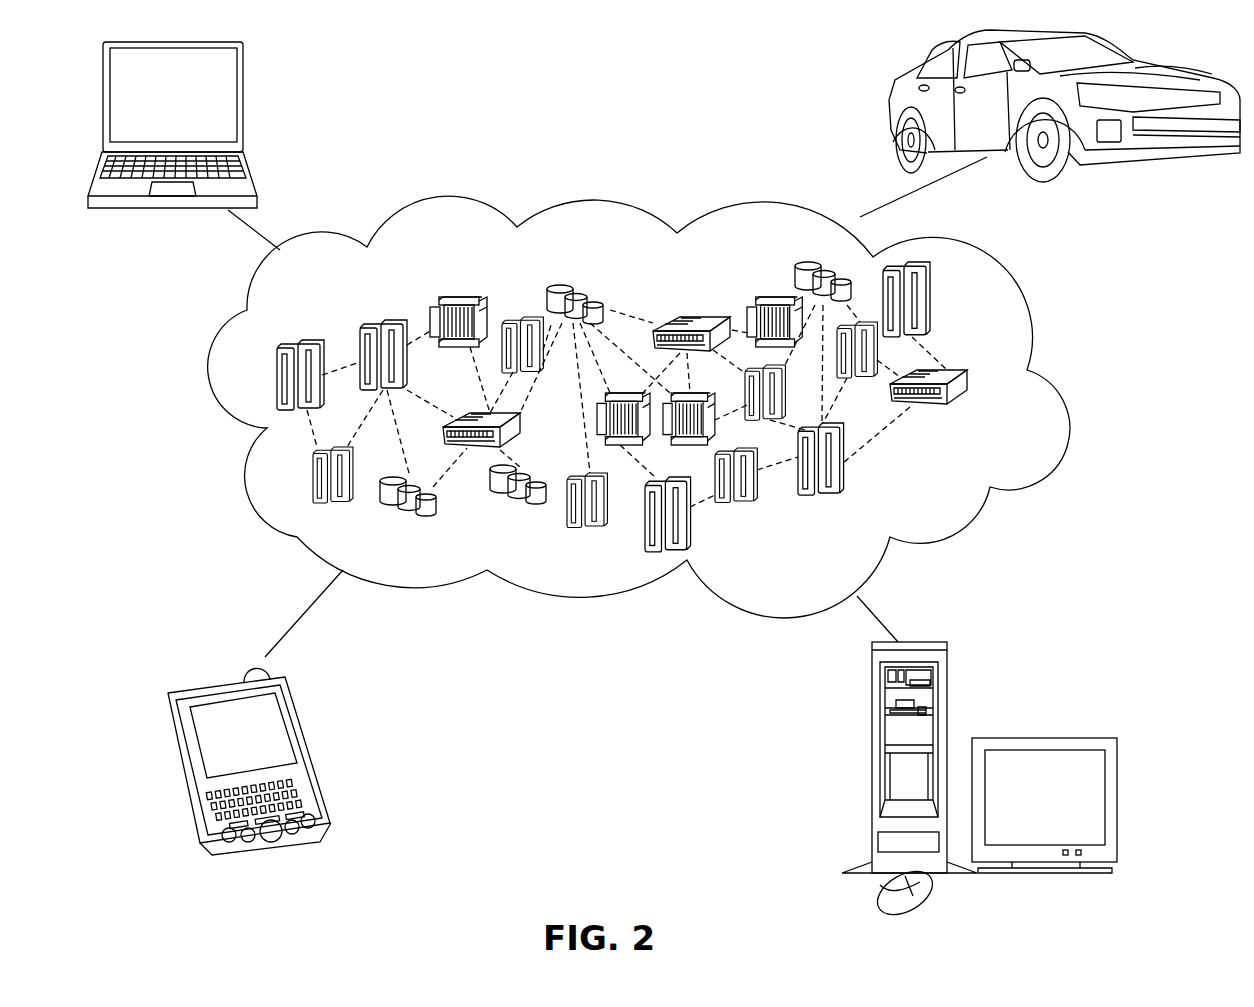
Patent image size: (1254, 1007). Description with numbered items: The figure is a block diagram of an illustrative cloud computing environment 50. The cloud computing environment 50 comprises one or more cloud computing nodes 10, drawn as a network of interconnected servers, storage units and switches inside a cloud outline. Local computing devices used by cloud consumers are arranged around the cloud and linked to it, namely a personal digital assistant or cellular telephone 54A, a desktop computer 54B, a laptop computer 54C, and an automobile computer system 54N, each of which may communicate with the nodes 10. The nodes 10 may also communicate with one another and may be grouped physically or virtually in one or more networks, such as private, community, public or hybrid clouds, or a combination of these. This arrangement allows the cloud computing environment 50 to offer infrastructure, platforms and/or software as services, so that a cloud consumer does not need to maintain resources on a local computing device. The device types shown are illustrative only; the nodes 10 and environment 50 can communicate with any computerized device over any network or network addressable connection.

The cloud computing nodes 10 is at (966, 490).
The cloud computing environment 50 is at (1043, 385).
The personal digital assistant or cellular telephone 54A is at (300, 718).
The desktop computer 54B is at (872, 700).
The laptop computer 54C is at (243, 80).
The automobile computer system 54N is at (883, 100).